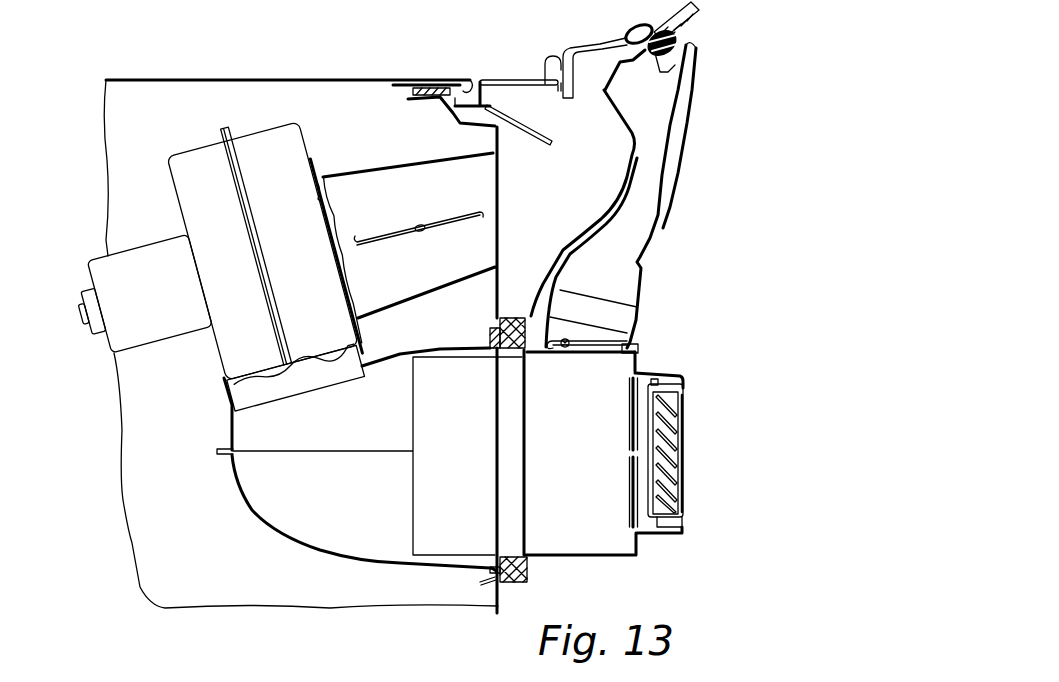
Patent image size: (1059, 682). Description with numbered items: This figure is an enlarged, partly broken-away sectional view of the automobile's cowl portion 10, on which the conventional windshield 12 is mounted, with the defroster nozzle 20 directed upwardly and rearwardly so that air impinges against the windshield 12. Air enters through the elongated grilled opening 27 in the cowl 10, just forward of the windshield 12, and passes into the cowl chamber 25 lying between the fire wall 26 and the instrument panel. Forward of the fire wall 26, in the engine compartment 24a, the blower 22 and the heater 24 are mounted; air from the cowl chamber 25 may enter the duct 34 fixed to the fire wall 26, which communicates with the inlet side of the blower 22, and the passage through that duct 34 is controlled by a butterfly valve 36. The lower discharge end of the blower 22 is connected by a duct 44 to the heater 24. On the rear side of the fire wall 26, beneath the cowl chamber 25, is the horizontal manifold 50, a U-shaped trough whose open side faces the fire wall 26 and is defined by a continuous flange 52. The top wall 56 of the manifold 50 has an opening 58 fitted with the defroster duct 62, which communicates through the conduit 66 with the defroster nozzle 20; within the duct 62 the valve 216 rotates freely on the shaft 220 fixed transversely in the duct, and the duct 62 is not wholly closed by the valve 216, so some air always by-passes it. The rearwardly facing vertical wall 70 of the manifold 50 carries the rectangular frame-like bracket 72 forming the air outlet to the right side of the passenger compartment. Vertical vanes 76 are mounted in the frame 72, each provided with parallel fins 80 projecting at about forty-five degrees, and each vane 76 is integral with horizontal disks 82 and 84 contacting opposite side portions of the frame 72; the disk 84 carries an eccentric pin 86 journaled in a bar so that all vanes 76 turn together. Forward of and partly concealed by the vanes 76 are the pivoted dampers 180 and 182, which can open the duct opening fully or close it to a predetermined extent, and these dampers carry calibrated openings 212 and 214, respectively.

The cowl portion 10 is at (598, 52).
The windshield 12 is at (699, 22).
The defroster nozzle 20 is at (662, 228).
The blower 22 is at (188, 182).
The heater 24 is at (433, 535).
The engine compartment 24a is at (243, 100).
The cowl chamber 25 is at (608, 133).
The fire wall 26 is at (508, 587).
The grilled opening 27 is at (530, 66).
The duct 34 is at (420, 162).
The butterfly valve 36 is at (390, 233).
The duct 44 is at (258, 477).
The manifold 50 is at (640, 557).
The flange 52 is at (527, 568).
The top wall 56 is at (530, 357).
The opening 58 is at (603, 357).
The defroster duct 62 is at (635, 347).
The conduit 66 is at (637, 318).
The vertical wall 70 is at (640, 366).
The frame-like bracket 72 is at (684, 378).
The vanes 76 is at (677, 430).
The fins 80 is at (677, 458).
The disk 82 is at (681, 515).
The disk 84 is at (684, 398).
The pin 86 is at (630, 408).
The damper 180 is at (637, 451).
The damper 182 is at (637, 500).
The opening 212 is at (630, 437).
The opening 214 is at (633, 480).
The valve 216 is at (589, 345).
The shaft 220 is at (566, 340).